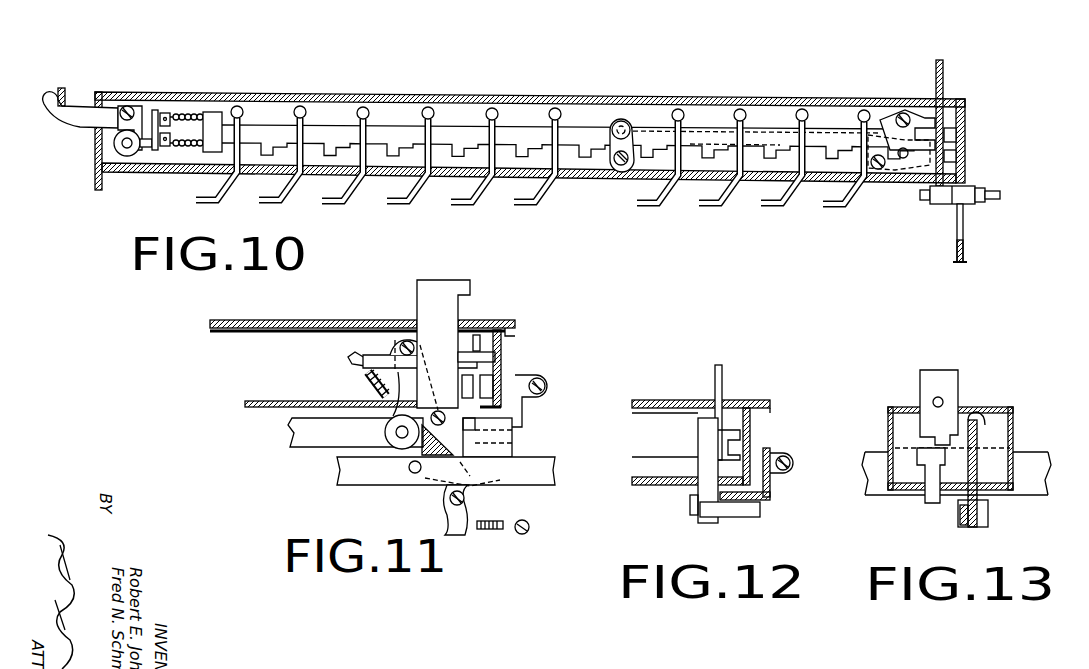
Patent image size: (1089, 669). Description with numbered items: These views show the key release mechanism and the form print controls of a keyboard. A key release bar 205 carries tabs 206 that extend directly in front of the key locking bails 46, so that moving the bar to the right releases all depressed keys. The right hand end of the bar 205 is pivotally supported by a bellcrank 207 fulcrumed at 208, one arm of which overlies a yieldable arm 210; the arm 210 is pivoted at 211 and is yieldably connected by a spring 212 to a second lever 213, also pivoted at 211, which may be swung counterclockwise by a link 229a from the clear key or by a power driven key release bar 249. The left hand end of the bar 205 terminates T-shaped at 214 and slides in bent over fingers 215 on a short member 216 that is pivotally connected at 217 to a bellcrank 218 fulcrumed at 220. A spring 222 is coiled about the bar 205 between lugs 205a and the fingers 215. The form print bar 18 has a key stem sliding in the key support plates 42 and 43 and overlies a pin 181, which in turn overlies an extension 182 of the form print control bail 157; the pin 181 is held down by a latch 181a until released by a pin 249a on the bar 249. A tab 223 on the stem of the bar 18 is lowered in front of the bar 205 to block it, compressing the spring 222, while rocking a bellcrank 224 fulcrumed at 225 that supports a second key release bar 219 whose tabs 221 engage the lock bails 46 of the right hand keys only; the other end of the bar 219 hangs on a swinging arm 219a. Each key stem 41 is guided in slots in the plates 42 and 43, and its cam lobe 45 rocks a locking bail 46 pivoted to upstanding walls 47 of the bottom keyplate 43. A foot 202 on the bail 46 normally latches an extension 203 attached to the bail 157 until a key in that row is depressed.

In FIG. 10, the form print bar 18 is at (937, 62).
In FIG. 11, the form print bar 18 is at (432, 292).
In FIG. 12, the key stem 41 is at (723, 380).
In FIG. 13, the key stem 41 is at (923, 378).
In FIG. 13, the plate 42 is at (900, 407).
In FIG. 13, the bottom keyplate 43 is at (895, 470).
In FIG. 13, the cam lobe 45 is at (940, 450).
In FIG. 10, the locking bail 46 is at (532, 136).
In FIG. 12, the locking bail 46 is at (645, 456).
In FIG. 13, the locking bail 46 is at (975, 415).
In FIG. 13, the upstanding walls 47 is at (1005, 420).
In FIG. 11, the form print control bail 157 is at (546, 378).
In FIG. 12, the form print control bail 157 is at (772, 492).
In FIG. 11, the pin 181 is at (495, 420).
In FIG. 11, the latch 181a is at (512, 448).
In FIG. 11, the extension 182 is at (492, 437).
In FIG. 12, the foot 202 is at (705, 492).
In FIG. 13, the foot 202 is at (980, 515).
In FIG. 12, the extension 203 is at (728, 522).
In FIG. 13, the extension 203 is at (958, 510).
In FIG. 10, the key release bar 205 is at (585, 130).
In FIG. 10, the lugs 205a is at (215, 118).
In FIG. 10, the tabs 206 is at (525, 160).
In FIG. 10, the bellcrank 207 is at (940, 115).
In FIG. 11, the bellcrank 207 is at (501, 350).
In FIG. 10, the fulcrum 208 is at (918, 94).
In FIG. 10, the yieldable arm 210 is at (966, 136).
In FIG. 11, the yieldable arm 210 is at (501, 360).
In FIG. 11, the pivot 211 is at (402, 340).
In FIG. 11, the spring 212 is at (367, 380).
In FIG. 11, the second lever 213 is at (415, 440).
In FIG. 10, the T-shaped end 214 is at (145, 125).
In FIG. 10, the bent over fingers 215 is at (165, 147).
In FIG. 10, the short member 216 is at (145, 109).
In FIG. 10, the pivotal connection 217 is at (125, 149).
In FIG. 10, the bellcrank 218 is at (85, 128).
In FIG. 10, the second key release bar 219 is at (628, 125).
In FIG. 10, the swinging arm 219a is at (618, 178).
In FIG. 10, the fulcrum 220 is at (130, 106).
In FIG. 10, the tabs 221 is at (758, 158).
In FIG. 10, the spring 222 is at (193, 112).
In FIG. 11, the tab 223 is at (480, 357).
In FIG. 10, the bellcrank 224 is at (966, 156).
In FIG. 10, the fulcrum 225 is at (879, 170).
In FIG. 11, the link 229a is at (300, 435).
In FIG. 11, the power driven key release bar 249 is at (345, 468).
In FIG. 11, the pin 249a is at (415, 475).